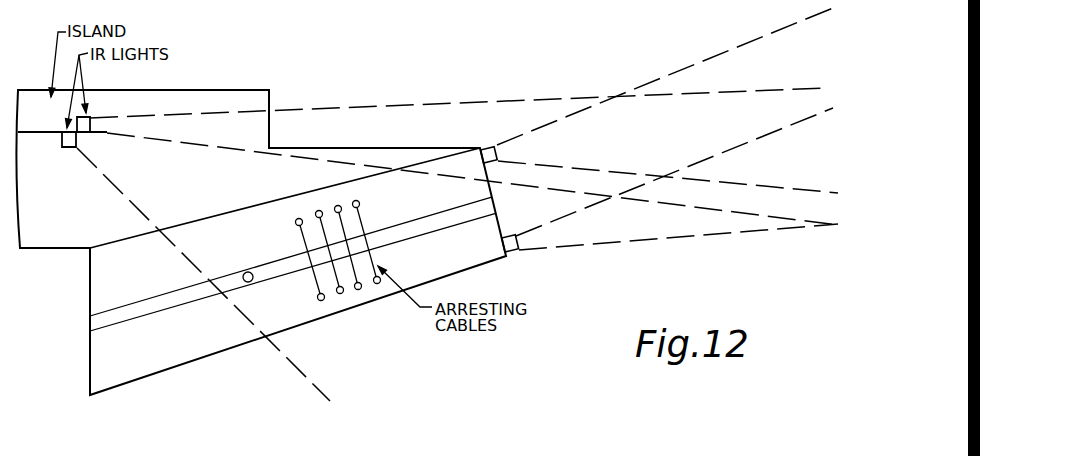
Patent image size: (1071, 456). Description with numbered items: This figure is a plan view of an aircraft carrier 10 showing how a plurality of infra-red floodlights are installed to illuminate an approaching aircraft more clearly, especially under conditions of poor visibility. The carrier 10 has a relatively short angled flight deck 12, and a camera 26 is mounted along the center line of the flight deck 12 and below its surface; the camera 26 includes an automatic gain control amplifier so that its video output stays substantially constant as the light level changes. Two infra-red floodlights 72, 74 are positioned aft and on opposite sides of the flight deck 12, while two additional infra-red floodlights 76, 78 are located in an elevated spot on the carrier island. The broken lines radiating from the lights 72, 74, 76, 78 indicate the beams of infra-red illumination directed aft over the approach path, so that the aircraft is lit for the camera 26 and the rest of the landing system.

The aircraft carrier 10 is at (261, 222).
The flight deck 12 is at (293, 296).
The camera 26 is at (337, 331).
The infra-red floodlight 72 is at (499, 155).
The infra-red floodlight 74 is at (568, 260).
The infra-red floodlight 76 is at (68, 148).
The infra-red floodlight 78 is at (88, 118).